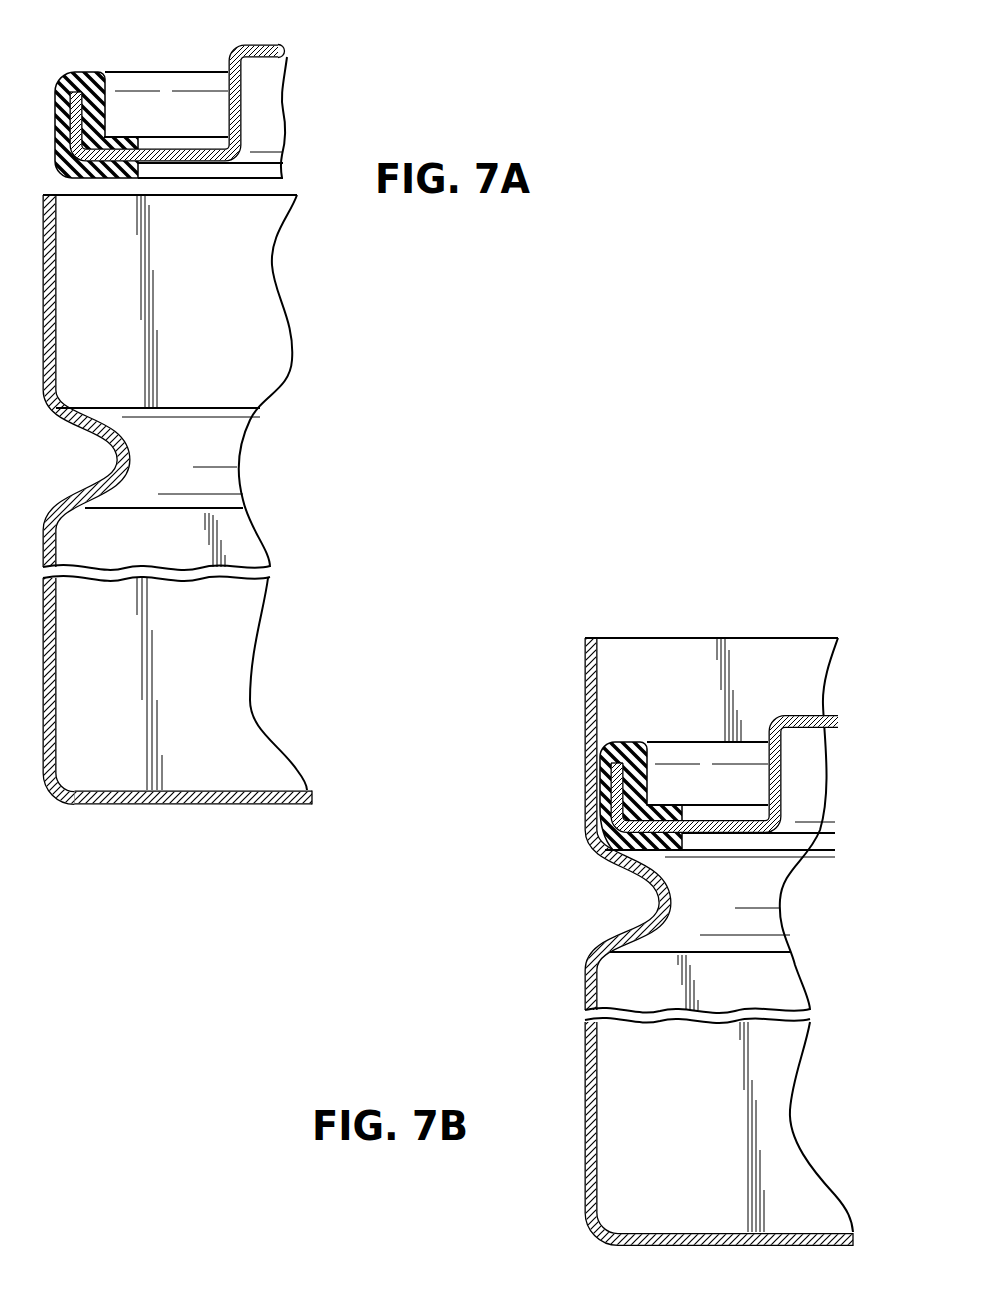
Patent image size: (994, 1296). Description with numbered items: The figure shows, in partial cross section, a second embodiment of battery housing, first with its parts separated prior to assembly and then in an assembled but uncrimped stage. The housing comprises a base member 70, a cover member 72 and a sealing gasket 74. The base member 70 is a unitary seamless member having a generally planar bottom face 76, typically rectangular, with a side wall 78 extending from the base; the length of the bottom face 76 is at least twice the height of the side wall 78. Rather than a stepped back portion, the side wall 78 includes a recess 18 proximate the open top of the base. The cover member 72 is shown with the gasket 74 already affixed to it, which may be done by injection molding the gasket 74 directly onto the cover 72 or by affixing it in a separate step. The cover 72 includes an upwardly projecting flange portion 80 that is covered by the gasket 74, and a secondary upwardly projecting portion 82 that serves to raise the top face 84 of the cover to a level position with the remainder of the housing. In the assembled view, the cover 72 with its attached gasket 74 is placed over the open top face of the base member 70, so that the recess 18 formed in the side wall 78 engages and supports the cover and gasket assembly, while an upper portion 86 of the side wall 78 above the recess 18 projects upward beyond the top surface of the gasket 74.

In FIG. 7A, the recess 18 is at (130, 462).
In FIG. 7B, the recess 18 is at (668, 910).
In FIG. 7A, the base member 70 is at (177, 446).
In FIG. 7B, the base member 70 is at (688, 942).
In FIG. 7A, the cover member 72 is at (164, 88).
In FIG. 7B, the cover member 72 is at (808, 706).
In FIG. 7A, the sealing gasket 74 is at (74, 107).
In FIG. 7B, the sealing gasket 74 is at (622, 745).
In FIG. 7A, the bottom face 76 is at (188, 798).
In FIG. 7A, the side wall 78 is at (52, 707).
In FIG. 7B, the side wall 78 is at (597, 1140).
In FIG. 7A, the upwardly projecting flange portion 80 is at (70, 76).
In FIG. 7A, the secondary upwardly projecting portion 82 is at (243, 97).
In FIG. 7A, the top face 84 is at (272, 45).
In FIG. 7B, the upper portion of the side wall 86 is at (585, 730).